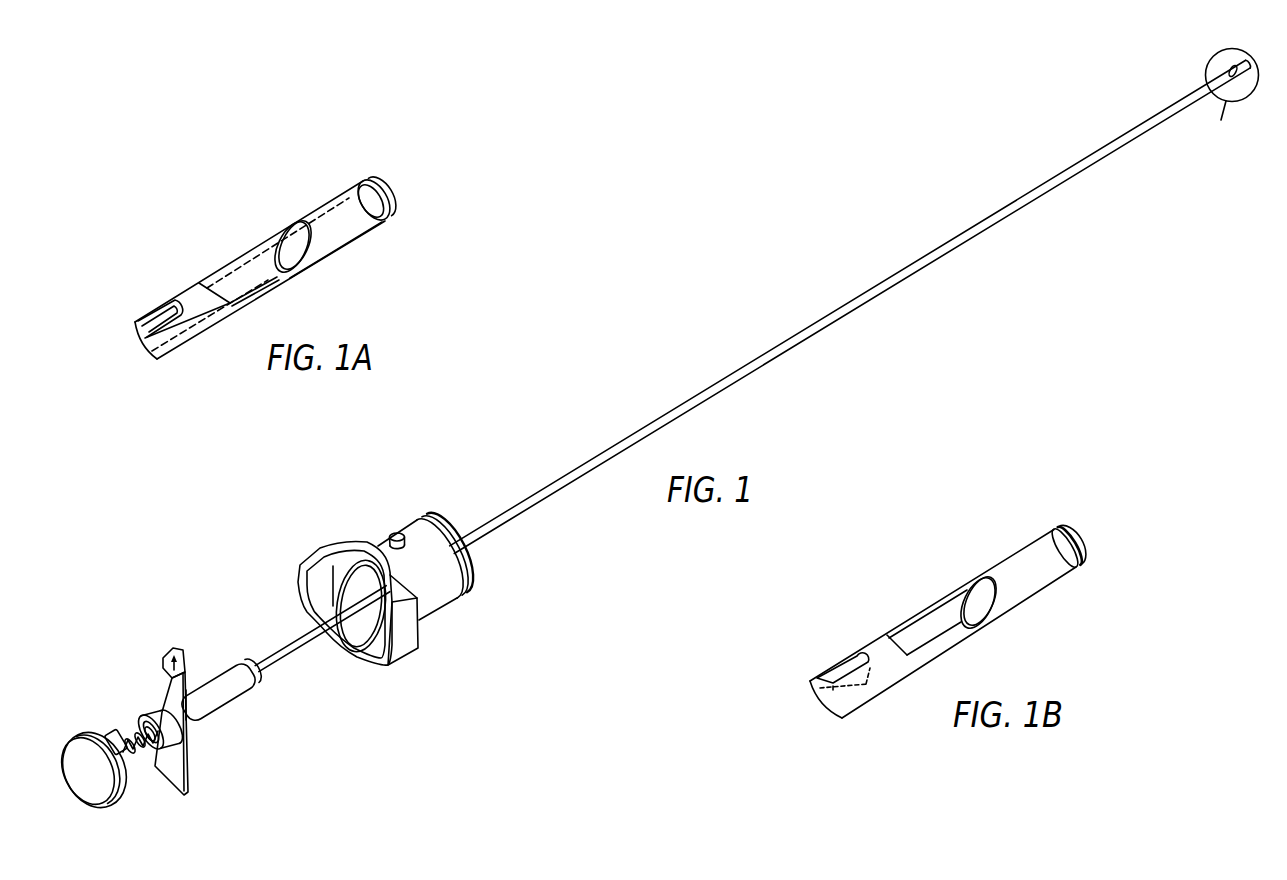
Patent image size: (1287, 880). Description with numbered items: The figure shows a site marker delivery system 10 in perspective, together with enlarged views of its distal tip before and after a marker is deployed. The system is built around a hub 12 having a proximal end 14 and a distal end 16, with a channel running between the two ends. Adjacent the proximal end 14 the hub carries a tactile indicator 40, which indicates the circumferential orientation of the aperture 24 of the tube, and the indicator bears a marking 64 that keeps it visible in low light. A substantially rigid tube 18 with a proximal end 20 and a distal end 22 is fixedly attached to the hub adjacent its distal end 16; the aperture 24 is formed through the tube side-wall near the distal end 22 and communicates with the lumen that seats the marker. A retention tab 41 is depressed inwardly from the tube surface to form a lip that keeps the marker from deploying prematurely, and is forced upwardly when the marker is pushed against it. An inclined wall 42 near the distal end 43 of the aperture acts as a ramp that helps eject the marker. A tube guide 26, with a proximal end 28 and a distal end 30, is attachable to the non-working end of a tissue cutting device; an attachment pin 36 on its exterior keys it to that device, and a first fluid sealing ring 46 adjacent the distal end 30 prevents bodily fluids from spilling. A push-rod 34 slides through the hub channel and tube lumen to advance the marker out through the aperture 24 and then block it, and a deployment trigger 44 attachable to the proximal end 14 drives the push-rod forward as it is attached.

In FIG. 1, the site marker delivery system 10 is at (733, 322).
In FIG. 1, the hub 12 is at (206, 676).
In FIG. 1, the proximal end 14 is at (150, 760).
In FIG. 1, the distal end 16 is at (248, 664).
In FIG. 1, the tube 18 is at (883, 273).
In FIG. 1, the proximal end 20 is at (258, 686).
In FIG. 1, the distal end 22 is at (1243, 55).
In FIG. 1A, the distal end 22 is at (377, 203).
In FIG. 1, the aperture 24 is at (1221, 72).
In FIG. 1A, the aperture 24 is at (238, 278).
In FIG. 1B, the aperture 24 is at (923, 633).
In FIG. 1, the tube guide 26 is at (429, 540).
In FIG. 1, the proximal end 28 is at (344, 661).
In FIG. 1, the distal end 30 is at (463, 526).
In FIG. 1, the push-rod 34 is at (133, 732).
In FIG. 1, the attachment pin 36 is at (392, 533).
In FIG. 1, the tactile indicator 40 is at (166, 656).
In FIG. 1B, the retention tab 41 is at (840, 668).
In FIG. 1A, the inclined wall 42 is at (290, 250).
In FIG. 1B, the inclined wall 42 is at (977, 603).
In FIG. 1A, the distal end 43 is at (302, 224).
In FIG. 1B, the distal end 43 is at (988, 578).
In FIG. 1, the deployment trigger 44 is at (75, 787).
In FIG. 1, the first fluid sealing ring 46 is at (468, 578).
In FIG. 1, the marking 64 is at (188, 704).